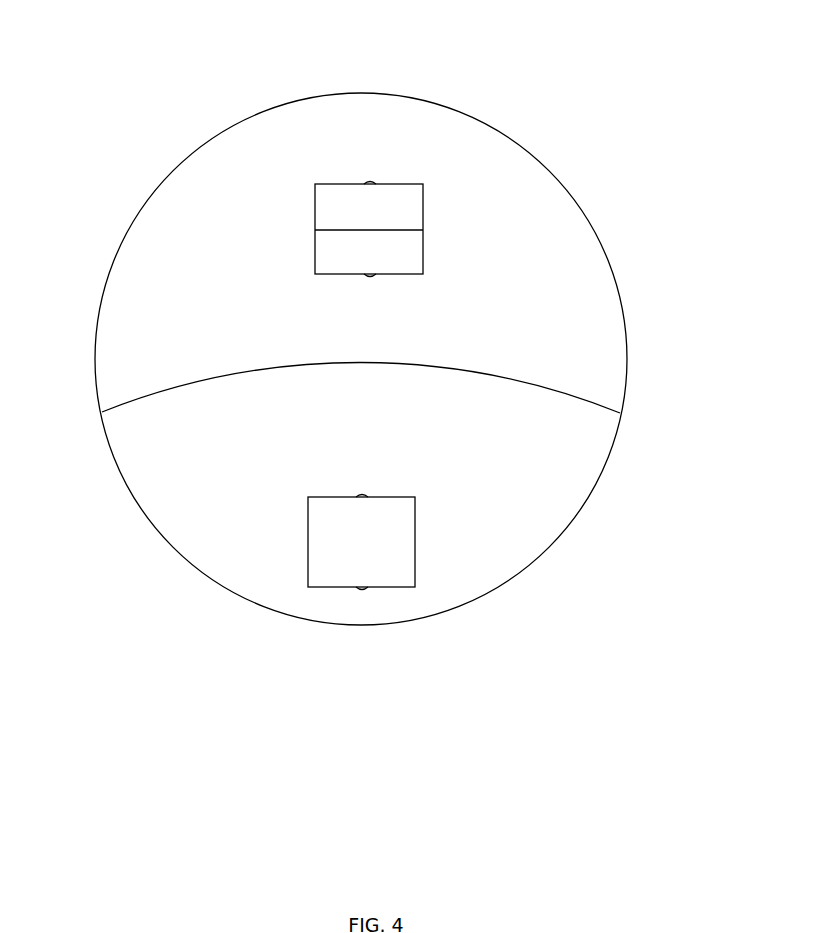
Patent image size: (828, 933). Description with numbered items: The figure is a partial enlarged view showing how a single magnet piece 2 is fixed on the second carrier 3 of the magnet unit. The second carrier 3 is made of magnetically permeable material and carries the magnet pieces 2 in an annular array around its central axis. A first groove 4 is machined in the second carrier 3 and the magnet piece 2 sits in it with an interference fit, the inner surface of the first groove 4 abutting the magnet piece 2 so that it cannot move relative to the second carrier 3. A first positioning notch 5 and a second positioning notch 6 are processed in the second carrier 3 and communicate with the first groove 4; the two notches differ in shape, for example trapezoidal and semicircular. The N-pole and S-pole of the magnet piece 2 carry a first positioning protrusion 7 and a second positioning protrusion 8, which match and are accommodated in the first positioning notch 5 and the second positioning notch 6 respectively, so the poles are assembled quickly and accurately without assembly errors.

The magnet piece 2 is at (323, 217).
The second carrier 3 is at (227, 407).
The first groove 4 is at (400, 553).
The first positioning notch 5 is at (362, 590).
The second positioning notch 6 is at (366, 494).
The first positioning protrusion 7 is at (374, 278).
The second positioning protrusion 8 is at (369, 180).